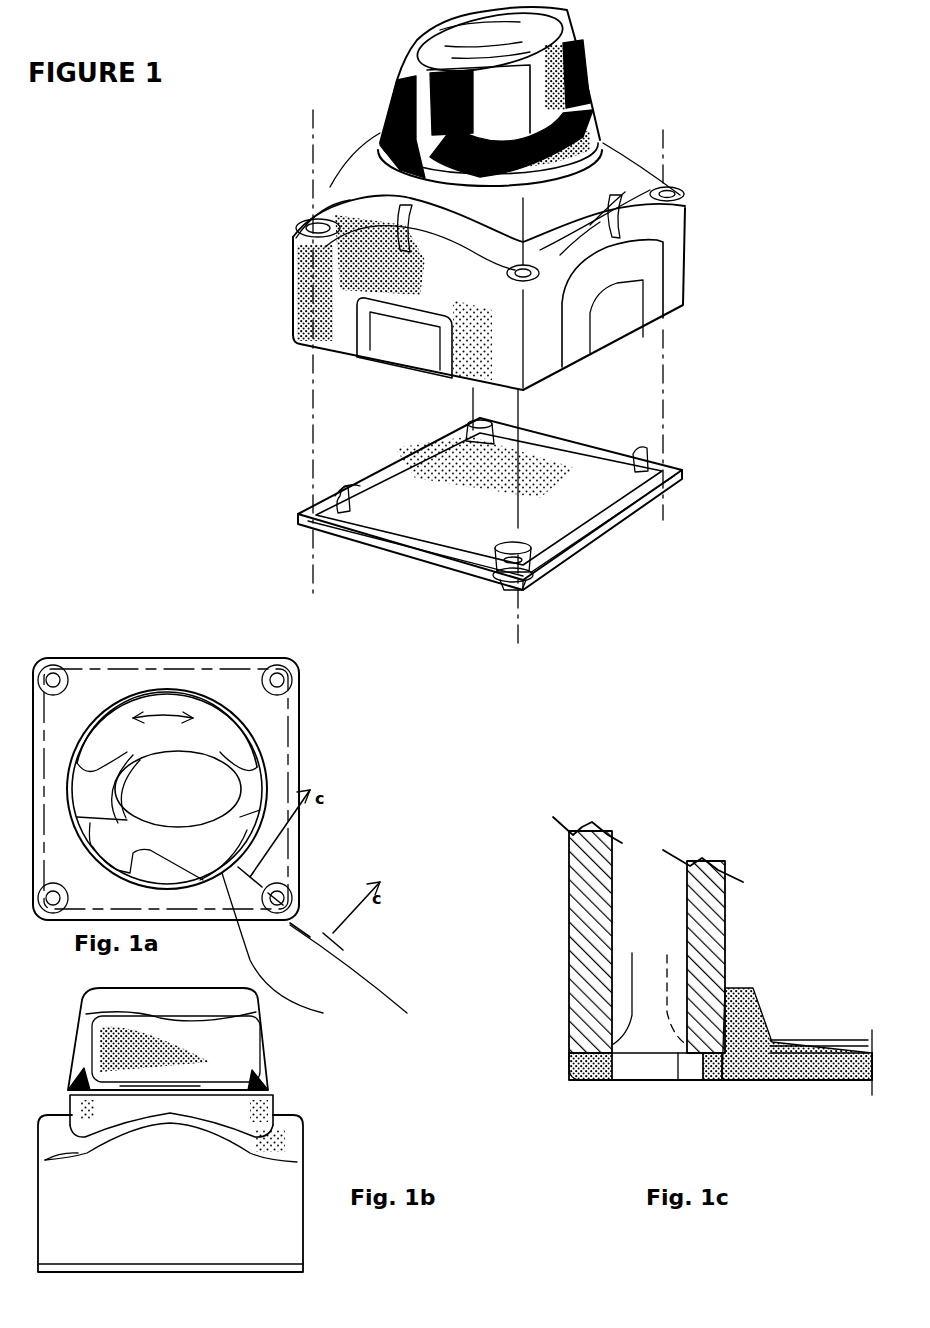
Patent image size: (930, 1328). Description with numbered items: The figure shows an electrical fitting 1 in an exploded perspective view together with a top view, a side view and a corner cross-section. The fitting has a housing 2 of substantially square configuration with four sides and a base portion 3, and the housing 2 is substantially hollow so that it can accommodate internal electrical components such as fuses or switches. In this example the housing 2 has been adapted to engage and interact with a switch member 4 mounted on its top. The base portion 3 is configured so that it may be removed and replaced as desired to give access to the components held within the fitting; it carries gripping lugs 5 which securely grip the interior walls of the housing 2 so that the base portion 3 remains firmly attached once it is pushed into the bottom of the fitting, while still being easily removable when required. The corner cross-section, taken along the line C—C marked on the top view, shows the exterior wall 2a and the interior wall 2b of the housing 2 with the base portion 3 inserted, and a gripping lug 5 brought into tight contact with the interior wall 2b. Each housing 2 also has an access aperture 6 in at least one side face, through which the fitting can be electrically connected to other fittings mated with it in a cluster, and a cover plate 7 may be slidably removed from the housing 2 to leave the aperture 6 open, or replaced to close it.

In FIG. 1, the electrical fitting 1 is at (247, 233).
In FIG. 1A, the electrical fitting 1 is at (333, 745).
In FIG. 1, the housing 2 is at (690, 225).
In FIG. 1B, the housing 2 is at (557, 977).
In FIG. 1C, the exterior wall 2a is at (563, 921).
In FIG. 1C, the interior wall 2b is at (730, 900).
In FIG. 1, the base portion 3 is at (607, 540).
In FIG. 1C, the base portion 3 is at (799, 1088).
In FIG. 1, the switch member 4 is at (590, 70).
In FIG. 1B, the switch member 4 is at (273, 1060).
In FIG. 1, the gripping lugs 5 is at (480, 578).
In FIG. 1C, the gripping lugs 5 is at (745, 973).
In FIG. 1, the access aperture 6 is at (300, 200).
In FIG. 1A, the access aperture 6 is at (255, 650).
In FIG. 1C, the access aperture 6 is at (646, 823).
In FIG. 1, the cover plate 7 is at (617, 320).